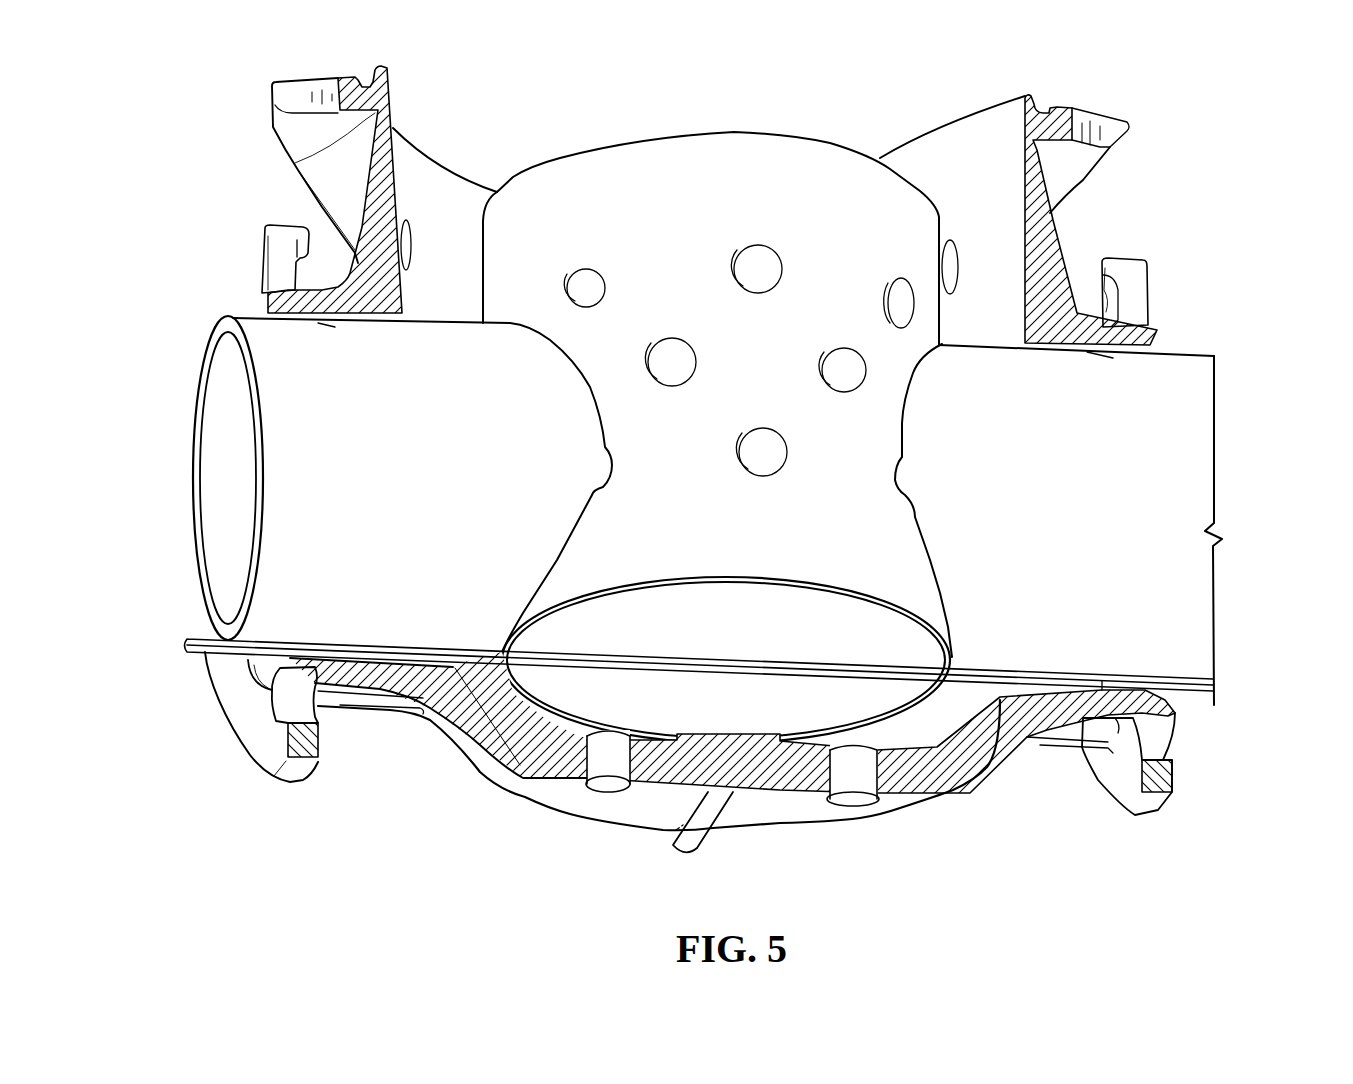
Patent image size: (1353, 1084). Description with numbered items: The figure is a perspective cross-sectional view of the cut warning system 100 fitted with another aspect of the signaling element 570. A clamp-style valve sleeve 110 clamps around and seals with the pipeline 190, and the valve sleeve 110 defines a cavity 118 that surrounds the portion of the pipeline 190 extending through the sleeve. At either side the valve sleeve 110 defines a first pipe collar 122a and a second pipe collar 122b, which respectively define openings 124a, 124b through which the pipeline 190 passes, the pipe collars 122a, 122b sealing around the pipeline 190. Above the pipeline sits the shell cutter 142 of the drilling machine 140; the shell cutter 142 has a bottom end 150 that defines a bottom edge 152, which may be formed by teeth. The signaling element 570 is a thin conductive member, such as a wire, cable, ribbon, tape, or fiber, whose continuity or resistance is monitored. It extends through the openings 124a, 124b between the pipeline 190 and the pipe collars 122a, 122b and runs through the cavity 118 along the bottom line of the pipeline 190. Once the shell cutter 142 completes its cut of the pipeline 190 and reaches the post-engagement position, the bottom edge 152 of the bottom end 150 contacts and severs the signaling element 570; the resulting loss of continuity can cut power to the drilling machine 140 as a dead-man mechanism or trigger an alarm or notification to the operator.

The cut warning system 100 is at (210, 138).
The cavity 118 is at (445, 230).
The valve sleeve 110 is at (1113, 131).
The drilling machine 140 is at (808, 160).
The shell cutter 142 is at (679, 364).
The first pipe collar 122a is at (307, 300).
The second pipe collar 122b is at (1127, 333).
The pipeline 190 is at (1202, 397).
The opening 124a is at (347, 685).
The opening 124b is at (1110, 680).
The bottom end 150 is at (903, 723).
The bottom edge 152 is at (726, 747).
The signaling element 570 is at (980, 673).